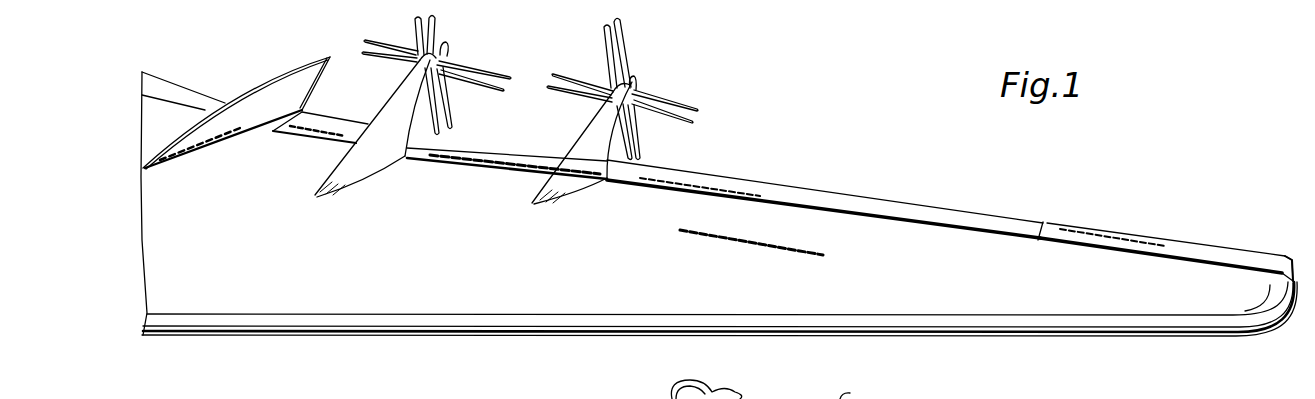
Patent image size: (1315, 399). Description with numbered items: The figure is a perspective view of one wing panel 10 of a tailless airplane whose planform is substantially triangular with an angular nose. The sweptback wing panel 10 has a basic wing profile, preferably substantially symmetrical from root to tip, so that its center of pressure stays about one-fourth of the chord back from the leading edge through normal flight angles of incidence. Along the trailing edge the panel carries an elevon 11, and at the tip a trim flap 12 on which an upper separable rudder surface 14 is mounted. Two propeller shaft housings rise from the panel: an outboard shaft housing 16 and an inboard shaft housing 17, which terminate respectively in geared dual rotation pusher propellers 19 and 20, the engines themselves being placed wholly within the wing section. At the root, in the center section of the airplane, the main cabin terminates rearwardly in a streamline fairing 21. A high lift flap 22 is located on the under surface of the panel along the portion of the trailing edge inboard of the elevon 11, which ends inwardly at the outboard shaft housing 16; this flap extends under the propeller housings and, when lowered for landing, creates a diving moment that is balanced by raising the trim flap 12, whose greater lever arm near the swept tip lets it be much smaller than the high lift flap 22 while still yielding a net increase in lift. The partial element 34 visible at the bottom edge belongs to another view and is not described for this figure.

The wing panel 10 is at (748, 287).
The trailing edge elevon 11 is at (852, 197).
The trim flap 12 is at (1284, 276).
The upper rudder surface 14 is at (1147, 239).
The outboard shaft housing 16 is at (595, 174).
The inboard shaft housing 17 is at (389, 145).
The pusher propeller 19 is at (653, 98).
The pusher propeller 20 is at (469, 68).
The streamline fairing 21 is at (288, 102).
The high lift flap 22 is at (336, 133).
The member 34 is at (757, 396).